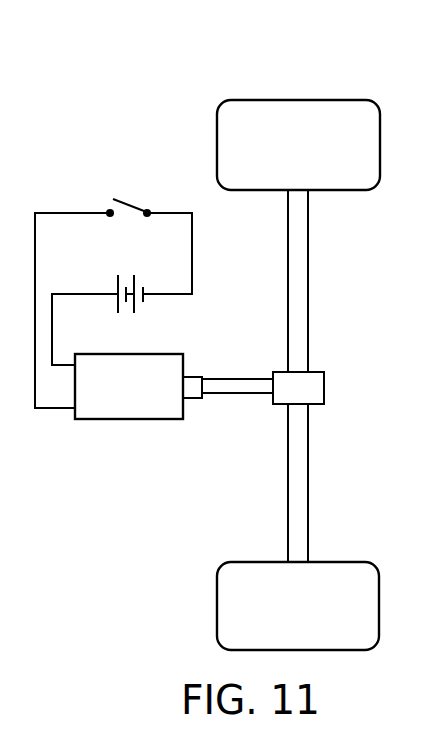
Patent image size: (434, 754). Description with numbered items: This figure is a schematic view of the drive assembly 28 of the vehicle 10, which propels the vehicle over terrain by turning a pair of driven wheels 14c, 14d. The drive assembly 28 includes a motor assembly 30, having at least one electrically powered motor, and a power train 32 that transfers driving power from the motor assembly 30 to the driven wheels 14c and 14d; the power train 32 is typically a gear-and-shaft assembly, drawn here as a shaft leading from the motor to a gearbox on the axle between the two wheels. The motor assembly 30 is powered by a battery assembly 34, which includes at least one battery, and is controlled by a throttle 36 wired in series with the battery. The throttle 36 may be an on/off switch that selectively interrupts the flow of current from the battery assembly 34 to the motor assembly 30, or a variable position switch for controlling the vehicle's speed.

The vehicle 10 is at (135, 87).
The driven wheel 14d is at (257, 101).
The driven wheel 14c is at (257, 562).
The drive assembly 28 is at (105, 445).
The motor assembly 30 is at (187, 363).
The power train 32 is at (280, 416).
The battery assembly 34 is at (136, 303).
The throttle 36 is at (128, 197).